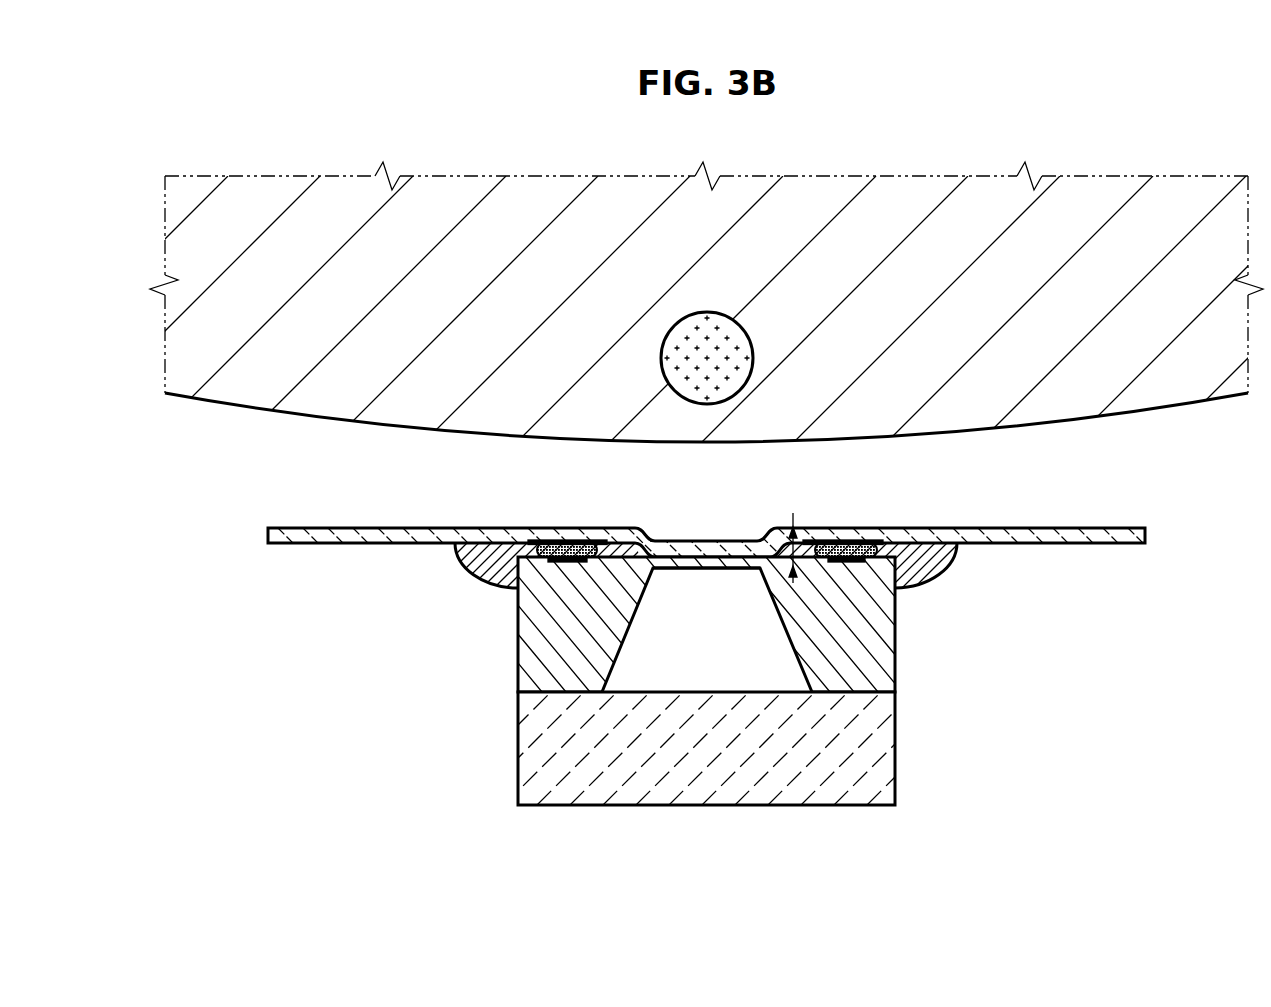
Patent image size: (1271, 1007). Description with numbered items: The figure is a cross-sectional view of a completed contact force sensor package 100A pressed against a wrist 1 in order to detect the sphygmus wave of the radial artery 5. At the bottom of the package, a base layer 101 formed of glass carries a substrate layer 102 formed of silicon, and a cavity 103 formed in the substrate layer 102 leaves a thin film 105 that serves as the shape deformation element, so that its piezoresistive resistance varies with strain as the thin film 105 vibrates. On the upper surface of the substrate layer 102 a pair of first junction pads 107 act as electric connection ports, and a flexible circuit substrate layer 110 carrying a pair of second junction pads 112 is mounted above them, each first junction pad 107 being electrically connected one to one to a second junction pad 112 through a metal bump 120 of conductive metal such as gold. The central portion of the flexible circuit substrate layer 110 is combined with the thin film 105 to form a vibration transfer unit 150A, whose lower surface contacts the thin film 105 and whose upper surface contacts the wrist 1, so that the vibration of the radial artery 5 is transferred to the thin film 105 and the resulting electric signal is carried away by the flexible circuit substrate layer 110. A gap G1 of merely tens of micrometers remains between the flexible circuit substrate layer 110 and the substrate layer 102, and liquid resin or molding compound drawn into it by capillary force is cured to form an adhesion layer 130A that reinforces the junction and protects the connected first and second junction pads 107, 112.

The wrist 1 is at (1162, 380).
The radial artery 5 is at (753, 358).
The contact force sensor package 100A is at (288, 505).
The base layer 101 is at (883, 747).
The substrate layer 102 is at (530, 650).
The cavity 103 is at (637, 658).
The thin film 105 is at (703, 568).
The first junction pads 107 is at (583, 562).
The flexible circuit substrate layer 110 is at (1150, 527).
The second junction pads 112 is at (612, 548).
The metal bump 120 is at (523, 545).
The adhesion layer 130A is at (455, 553).
The vibration transfer unit 150A is at (692, 540).
The gap G1 is at (793, 536).